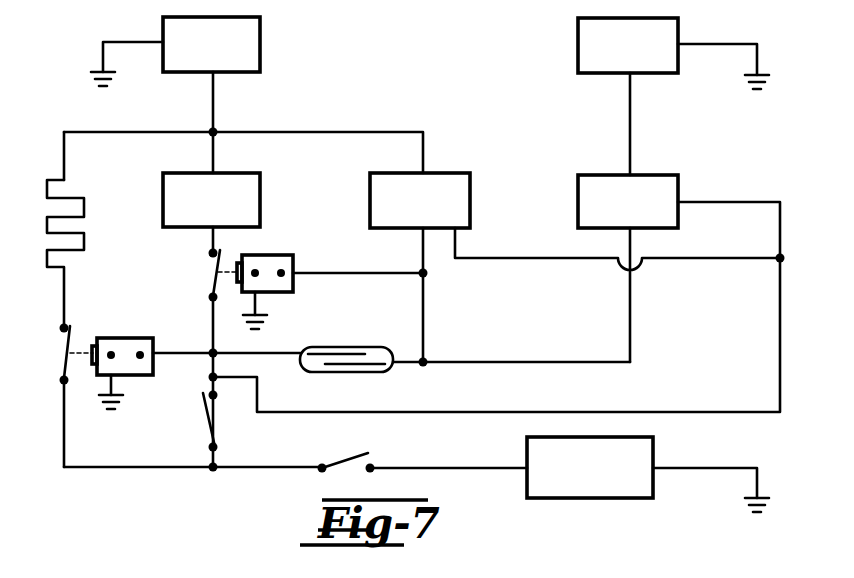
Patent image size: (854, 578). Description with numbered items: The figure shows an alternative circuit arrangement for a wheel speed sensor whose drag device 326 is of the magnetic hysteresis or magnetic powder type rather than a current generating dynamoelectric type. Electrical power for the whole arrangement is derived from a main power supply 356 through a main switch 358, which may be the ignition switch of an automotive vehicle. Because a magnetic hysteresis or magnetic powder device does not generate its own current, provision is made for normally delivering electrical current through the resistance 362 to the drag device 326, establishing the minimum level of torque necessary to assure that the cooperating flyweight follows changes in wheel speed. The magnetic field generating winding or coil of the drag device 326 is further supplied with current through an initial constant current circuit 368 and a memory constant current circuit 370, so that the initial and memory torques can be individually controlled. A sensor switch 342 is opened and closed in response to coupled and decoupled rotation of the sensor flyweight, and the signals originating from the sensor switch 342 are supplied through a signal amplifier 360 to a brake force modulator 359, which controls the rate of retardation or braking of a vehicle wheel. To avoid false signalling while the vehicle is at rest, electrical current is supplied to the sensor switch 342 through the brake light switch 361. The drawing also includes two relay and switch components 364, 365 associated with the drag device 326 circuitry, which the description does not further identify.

The drag device 326 is at (247, 80).
The brake force modulator 359 is at (578, 71).
The signal amplifier 360 is at (578, 185).
The resistance 362 is at (112, 200).
The initial constant current circuit 368 is at (282, 192).
The memory constant current circuit 370 is at (454, 173).
The relay switch 365 is at (209, 288).
The relay 364 is at (150, 338).
The sensor switch 342 is at (318, 346).
The brake light switch 361 is at (204, 434).
The main switch 358 is at (360, 454).
The main power supply 356 is at (654, 465).